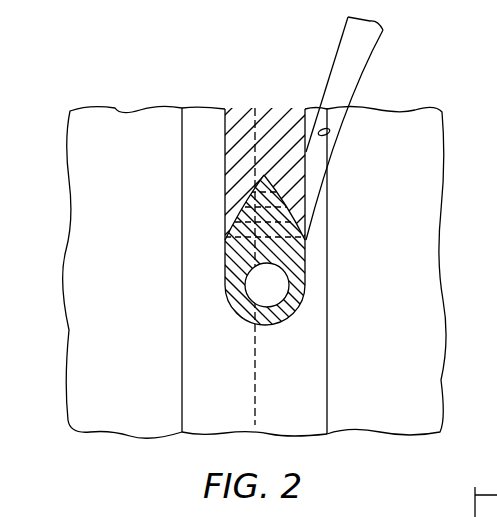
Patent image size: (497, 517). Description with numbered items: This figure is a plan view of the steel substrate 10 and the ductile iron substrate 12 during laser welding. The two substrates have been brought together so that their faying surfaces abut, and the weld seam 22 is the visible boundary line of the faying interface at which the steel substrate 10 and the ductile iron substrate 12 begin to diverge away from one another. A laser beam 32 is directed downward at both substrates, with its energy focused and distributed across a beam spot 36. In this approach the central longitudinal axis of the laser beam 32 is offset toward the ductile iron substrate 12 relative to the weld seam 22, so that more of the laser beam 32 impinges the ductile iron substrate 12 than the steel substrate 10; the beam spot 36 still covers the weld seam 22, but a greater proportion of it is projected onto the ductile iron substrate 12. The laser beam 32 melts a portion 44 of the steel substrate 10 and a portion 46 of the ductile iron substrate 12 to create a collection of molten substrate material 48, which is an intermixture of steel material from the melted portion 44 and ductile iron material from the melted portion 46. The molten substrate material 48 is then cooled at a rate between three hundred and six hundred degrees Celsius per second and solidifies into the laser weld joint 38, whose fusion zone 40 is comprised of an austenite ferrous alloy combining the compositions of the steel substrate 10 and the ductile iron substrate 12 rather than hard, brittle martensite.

The steel substrate 10 is at (142, 367).
The ductile iron substrate 12 is at (385, 362).
The weld seam 22 is at (256, 387).
The laser beam 32 is at (373, 53).
The beam spot 36 is at (277, 292).
The laser weld joint 38 is at (240, 125).
The fusion zone 40 is at (225, 158).
The melted portion of the steel substrate 44 is at (228, 266).
The melted portion of the ductile iron substrate 46 is at (288, 240).
The molten substrate material 48 is at (231, 239).